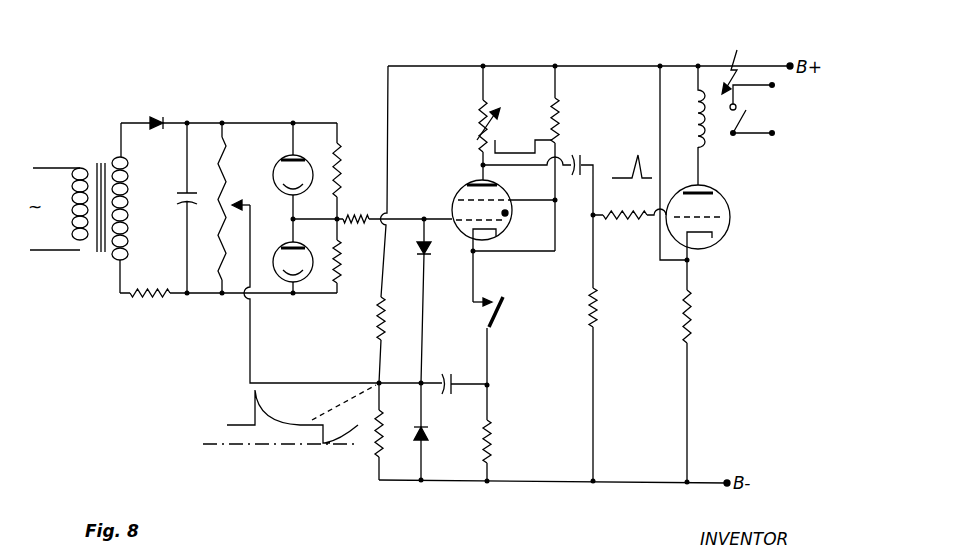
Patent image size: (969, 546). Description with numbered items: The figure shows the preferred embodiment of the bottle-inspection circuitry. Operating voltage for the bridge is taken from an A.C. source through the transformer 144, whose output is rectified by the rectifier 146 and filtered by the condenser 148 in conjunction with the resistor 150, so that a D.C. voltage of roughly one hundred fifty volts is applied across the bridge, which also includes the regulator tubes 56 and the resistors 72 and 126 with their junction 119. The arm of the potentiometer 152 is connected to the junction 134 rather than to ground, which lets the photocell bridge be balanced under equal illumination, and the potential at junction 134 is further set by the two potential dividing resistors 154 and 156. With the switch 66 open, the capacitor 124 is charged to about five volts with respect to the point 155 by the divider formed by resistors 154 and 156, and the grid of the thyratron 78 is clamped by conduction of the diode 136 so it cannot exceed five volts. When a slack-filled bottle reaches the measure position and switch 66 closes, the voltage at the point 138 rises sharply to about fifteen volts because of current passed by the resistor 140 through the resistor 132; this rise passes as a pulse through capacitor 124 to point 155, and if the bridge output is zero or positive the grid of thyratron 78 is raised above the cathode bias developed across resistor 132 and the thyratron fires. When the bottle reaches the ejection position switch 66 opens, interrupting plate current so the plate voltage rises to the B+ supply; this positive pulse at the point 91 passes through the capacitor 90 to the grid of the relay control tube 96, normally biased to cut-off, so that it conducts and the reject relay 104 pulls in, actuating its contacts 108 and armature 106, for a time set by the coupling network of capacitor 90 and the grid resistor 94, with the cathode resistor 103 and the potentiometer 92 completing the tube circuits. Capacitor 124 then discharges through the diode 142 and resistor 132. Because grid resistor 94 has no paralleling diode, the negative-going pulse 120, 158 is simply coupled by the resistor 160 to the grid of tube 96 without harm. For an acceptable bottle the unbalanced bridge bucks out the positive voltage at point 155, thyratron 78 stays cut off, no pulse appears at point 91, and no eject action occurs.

The transformer 144 is at (95, 165).
The rectifier 146 is at (161, 119).
The condenser 148 is at (183, 199).
The resistor 150 is at (135, 297).
The potentiometer 152 is at (228, 204).
The voltage regulator tubes 56 is at (283, 160).
The capacitor 124 is at (342, 150).
The resistor 72 is at (346, 216).
The resistor 126 is at (357, 256).
The junction 119 is at (338, 237).
The potential dividing resistor 154 is at (377, 313).
The point 155 is at (378, 382).
The junction 134 is at (420, 382).
The potential dividing resistor 156 is at (377, 458).
The diode 142 is at (430, 433).
The resistor 132 is at (492, 443).
The point 138 is at (490, 385).
The switch 66 is at (500, 320).
The diode 136 is at (432, 250).
The potentiometer 92 is at (478, 120).
The thyratron 78 is at (455, 200).
The resistor 140 is at (566, 104).
The capacitor 90 is at (580, 150).
The pulse waveform 120 is at (637, 156).
The negative-going pulse 158 is at (596, 187).
The resistor 160 is at (628, 226).
The point 91 is at (592, 216).
The grid resistor 94 is at (597, 313).
The cathode resistor 103 is at (694, 320).
The relay control tube 96 is at (732, 228).
The reject relay 104 is at (712, 140).
The relay contacts 108 is at (750, 112).
The relay armature 106 is at (732, 59).